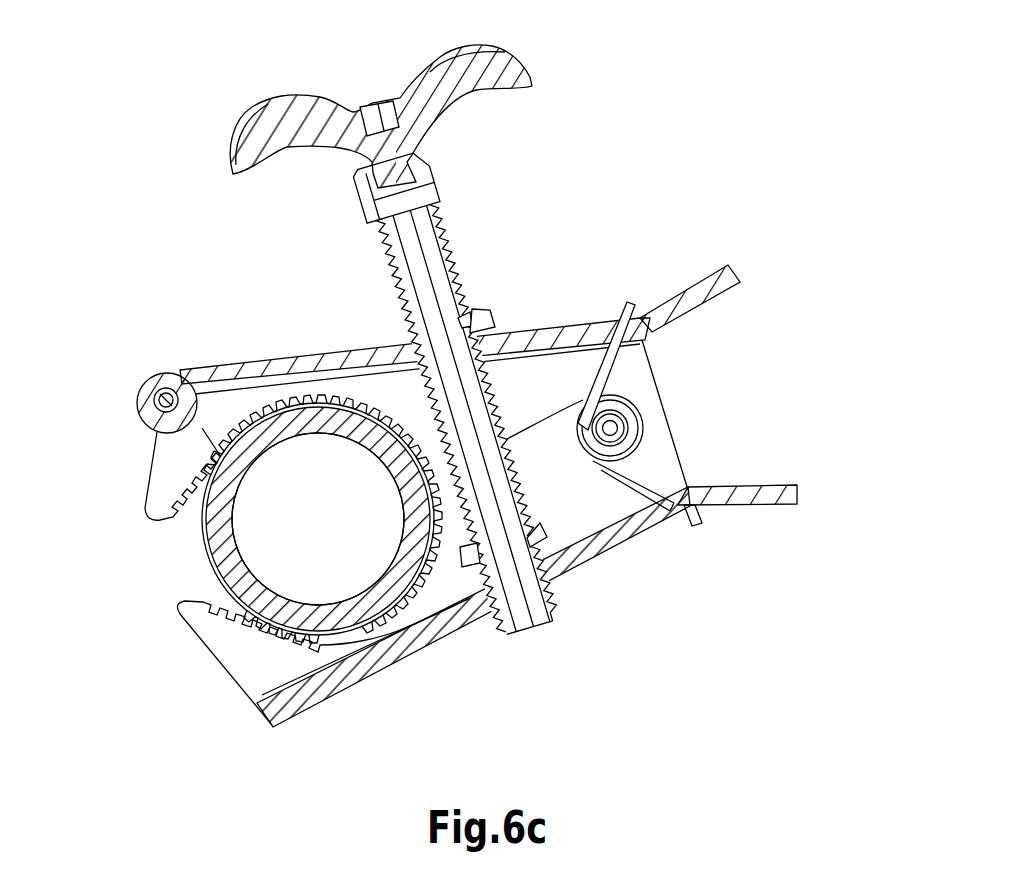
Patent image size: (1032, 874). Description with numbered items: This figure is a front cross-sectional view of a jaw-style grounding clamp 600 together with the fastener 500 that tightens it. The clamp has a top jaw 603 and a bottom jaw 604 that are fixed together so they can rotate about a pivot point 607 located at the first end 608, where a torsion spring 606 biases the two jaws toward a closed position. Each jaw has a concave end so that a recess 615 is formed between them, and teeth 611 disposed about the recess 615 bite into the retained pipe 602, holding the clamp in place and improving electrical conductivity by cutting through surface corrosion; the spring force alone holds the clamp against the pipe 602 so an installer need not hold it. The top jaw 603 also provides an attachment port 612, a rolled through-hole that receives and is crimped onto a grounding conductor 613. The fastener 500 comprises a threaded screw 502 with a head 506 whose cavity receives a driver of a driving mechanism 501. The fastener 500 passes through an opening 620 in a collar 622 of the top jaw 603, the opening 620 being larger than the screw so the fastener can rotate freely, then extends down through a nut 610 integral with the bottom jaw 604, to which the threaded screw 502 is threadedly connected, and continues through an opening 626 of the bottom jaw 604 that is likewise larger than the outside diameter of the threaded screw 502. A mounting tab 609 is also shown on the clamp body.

The fastener 500 is at (205, 135).
The driving mechanism 501 is at (478, 62).
The threaded screw 502 is at (392, 263).
The head 506 is at (358, 206).
The grounding clamp 600 is at (605, 178).
The pipe 602 is at (222, 558).
The top jaw 603 is at (163, 476).
The bottom jaw 604 is at (235, 662).
The torsion spring 606 is at (640, 480).
The pivot point 607 is at (630, 426).
The first end 608 is at (700, 366).
The mounting tab 609 is at (800, 495).
The nut 610 is at (577, 545).
The teeth 611 is at (222, 452).
The attachment port 612 is at (157, 397).
The grounding conductor 613 is at (163, 398).
The recess 615 is at (205, 535).
The opening 620 is at (465, 318).
The collar 622 is at (485, 314).
The opening 626 is at (545, 577).